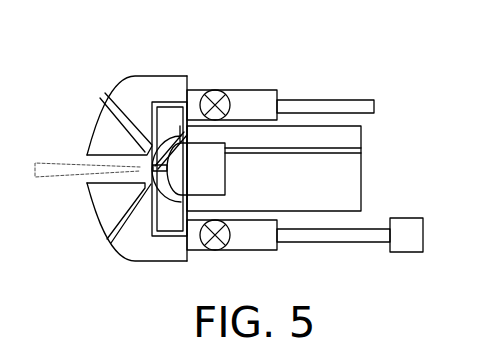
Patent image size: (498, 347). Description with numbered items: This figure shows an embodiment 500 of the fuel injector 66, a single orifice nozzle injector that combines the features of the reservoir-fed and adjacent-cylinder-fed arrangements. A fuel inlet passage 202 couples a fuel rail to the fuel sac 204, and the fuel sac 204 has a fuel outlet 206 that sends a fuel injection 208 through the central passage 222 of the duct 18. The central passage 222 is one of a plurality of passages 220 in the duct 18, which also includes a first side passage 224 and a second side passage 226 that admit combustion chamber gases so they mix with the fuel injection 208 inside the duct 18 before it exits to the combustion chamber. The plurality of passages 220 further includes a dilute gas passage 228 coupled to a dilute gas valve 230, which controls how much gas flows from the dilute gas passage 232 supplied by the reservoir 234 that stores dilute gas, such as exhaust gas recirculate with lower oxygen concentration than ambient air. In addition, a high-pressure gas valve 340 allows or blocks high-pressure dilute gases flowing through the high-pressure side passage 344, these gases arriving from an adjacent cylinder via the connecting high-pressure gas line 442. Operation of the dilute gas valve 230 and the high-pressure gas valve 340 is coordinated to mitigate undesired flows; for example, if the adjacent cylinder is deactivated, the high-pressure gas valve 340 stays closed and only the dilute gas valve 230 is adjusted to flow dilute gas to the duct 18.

The embodiment of the fuel injector 500 is at (110, 54).
The duct 18 is at (187, 75).
The high-pressure side passage 344 is at (160, 101).
The high-pressure gas valve 340 is at (223, 89).
The connecting high-pressure gas line 442 is at (322, 100).
The first side passage 224 is at (108, 106).
The fuel injection 208 is at (75, 167).
The fuel outlet 206 is at (182, 143).
The fuel sac 204 is at (225, 182).
The fuel inlet passage 202 is at (357, 153).
The fuel injector 66 is at (362, 200).
The central passage 222 is at (104, 184).
The plurality of passages 220 is at (92, 265).
The second side passage 226 is at (127, 240).
The dilute gas passage 228 is at (172, 238).
The dilute gas valve 230 is at (218, 250).
The dilute gas passage 232 is at (307, 243).
The reservoir 234 is at (417, 253).